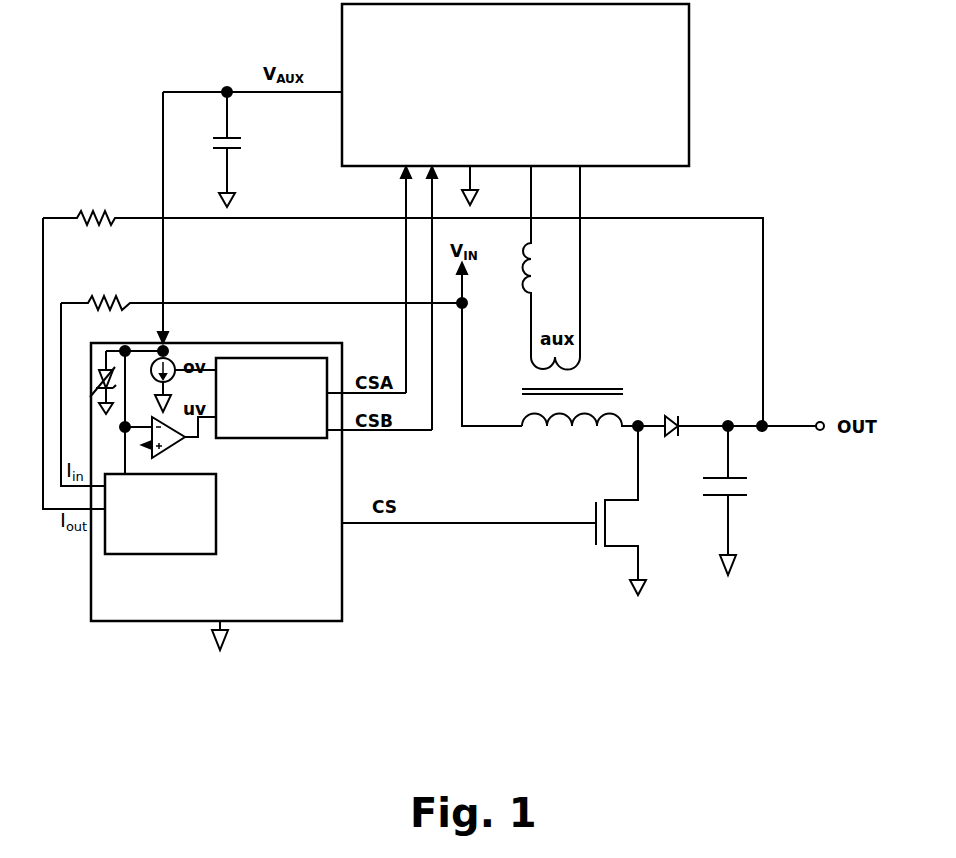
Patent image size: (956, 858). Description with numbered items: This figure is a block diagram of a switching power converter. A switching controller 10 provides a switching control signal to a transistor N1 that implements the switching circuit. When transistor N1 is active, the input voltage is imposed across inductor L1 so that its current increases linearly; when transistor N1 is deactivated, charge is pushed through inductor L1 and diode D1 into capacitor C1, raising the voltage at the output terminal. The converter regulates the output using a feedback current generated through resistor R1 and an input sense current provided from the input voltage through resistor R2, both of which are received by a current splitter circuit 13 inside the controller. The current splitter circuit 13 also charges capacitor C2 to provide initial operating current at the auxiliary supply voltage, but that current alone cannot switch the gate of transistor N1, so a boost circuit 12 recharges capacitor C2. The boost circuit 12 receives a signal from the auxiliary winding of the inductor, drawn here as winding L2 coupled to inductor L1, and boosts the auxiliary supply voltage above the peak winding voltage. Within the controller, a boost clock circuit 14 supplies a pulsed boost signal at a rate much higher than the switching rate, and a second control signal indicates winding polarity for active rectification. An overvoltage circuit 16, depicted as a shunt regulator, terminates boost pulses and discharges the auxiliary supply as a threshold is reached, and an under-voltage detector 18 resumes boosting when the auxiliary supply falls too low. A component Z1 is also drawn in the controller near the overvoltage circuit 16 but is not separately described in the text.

The switching controller 10 is at (216, 496).
The boost circuit 12 is at (515, 85).
The current splitter circuit 13 is at (160, 514).
The boost clock circuit 14 is at (271, 398).
The overvoltage circuit 16 is at (168, 358).
The under-voltage detector 18 is at (165, 450).
The resistor R1 is at (403, 341).
The resistor R2 is at (261, 371).
The capacitor C1 is at (709, 500).
The capacitor C2 is at (241, 147).
The zener diode Z1 is at (91, 382).
The inductor L1 is at (593, 437).
The auxiliary winding L2 is at (536, 268).
The diode D1 is at (739, 416).
The transistor N1 is at (505, 510).